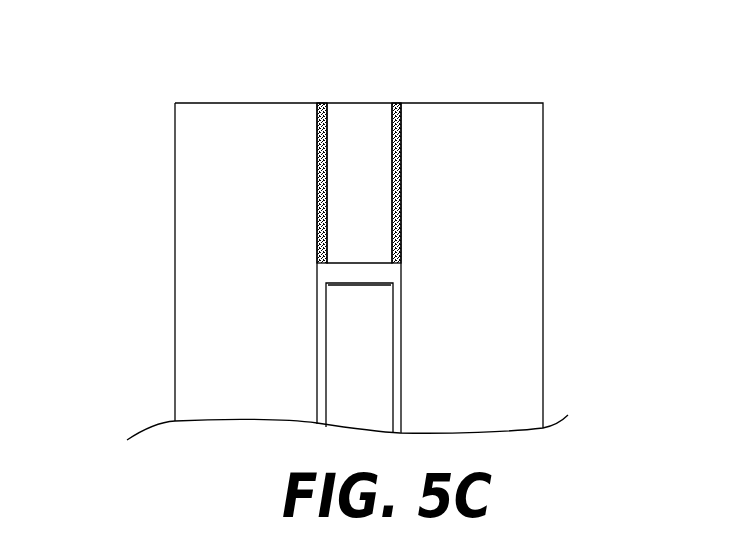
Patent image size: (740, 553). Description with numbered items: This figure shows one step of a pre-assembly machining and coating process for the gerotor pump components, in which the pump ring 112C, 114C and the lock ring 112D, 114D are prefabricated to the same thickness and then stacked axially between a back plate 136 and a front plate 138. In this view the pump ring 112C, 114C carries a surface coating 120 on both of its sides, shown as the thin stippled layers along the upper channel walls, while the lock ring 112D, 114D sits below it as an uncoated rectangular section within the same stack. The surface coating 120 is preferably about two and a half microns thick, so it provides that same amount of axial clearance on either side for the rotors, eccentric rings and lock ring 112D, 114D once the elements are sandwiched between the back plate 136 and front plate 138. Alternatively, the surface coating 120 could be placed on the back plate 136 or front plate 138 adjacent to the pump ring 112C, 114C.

The pump ring 112C is at (352, 133).
The pump ring 114C is at (294, 149).
The surface coating 120 is at (316, 238).
The lock ring 112D is at (365, 343).
The lock ring 114D is at (250, 316).
The back plate 136 is at (223, 398).
The front plate 138 is at (482, 348).